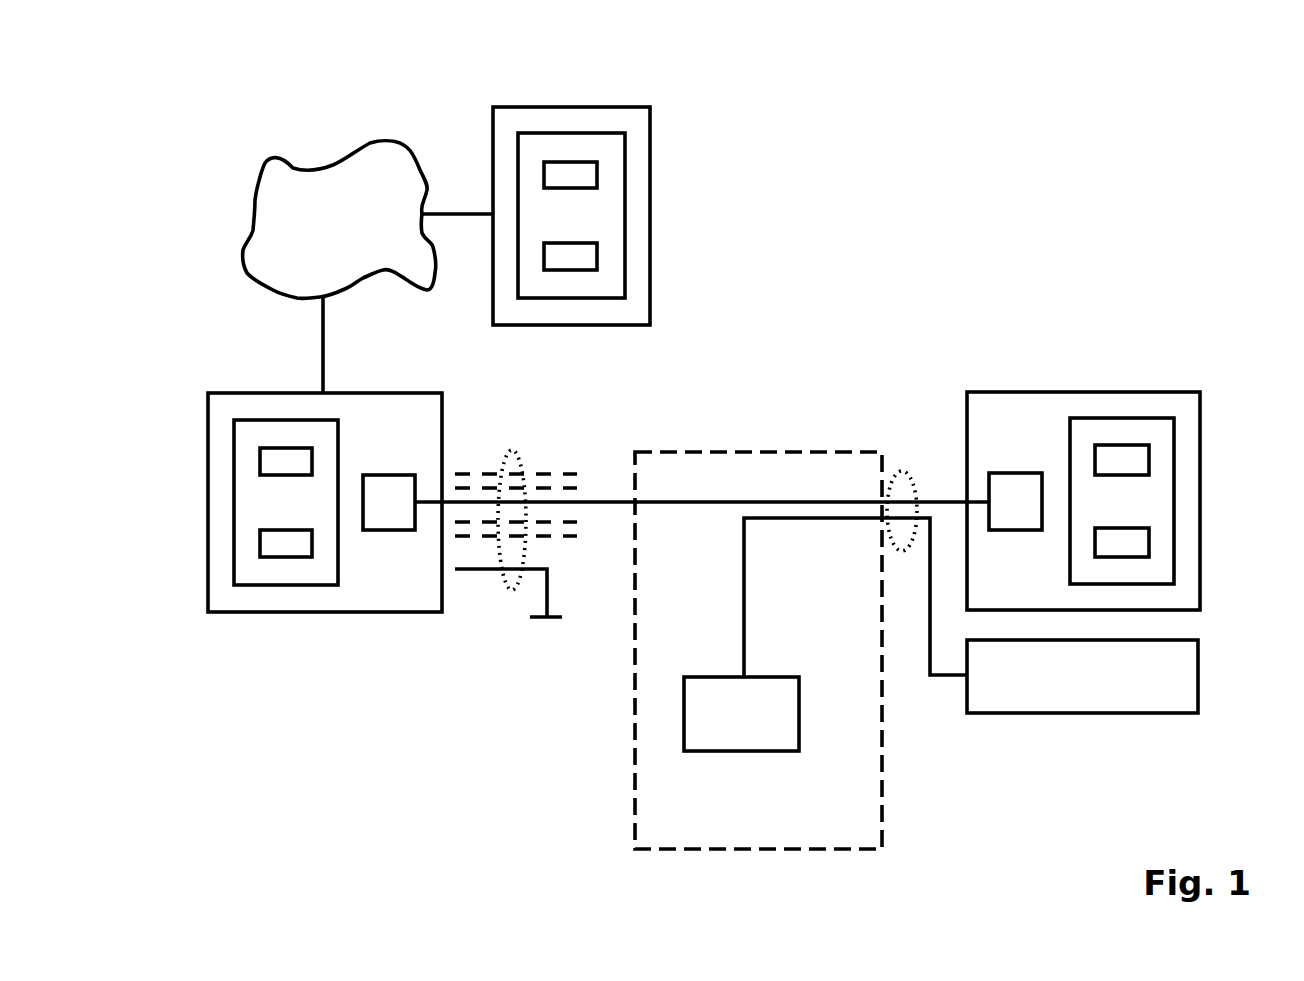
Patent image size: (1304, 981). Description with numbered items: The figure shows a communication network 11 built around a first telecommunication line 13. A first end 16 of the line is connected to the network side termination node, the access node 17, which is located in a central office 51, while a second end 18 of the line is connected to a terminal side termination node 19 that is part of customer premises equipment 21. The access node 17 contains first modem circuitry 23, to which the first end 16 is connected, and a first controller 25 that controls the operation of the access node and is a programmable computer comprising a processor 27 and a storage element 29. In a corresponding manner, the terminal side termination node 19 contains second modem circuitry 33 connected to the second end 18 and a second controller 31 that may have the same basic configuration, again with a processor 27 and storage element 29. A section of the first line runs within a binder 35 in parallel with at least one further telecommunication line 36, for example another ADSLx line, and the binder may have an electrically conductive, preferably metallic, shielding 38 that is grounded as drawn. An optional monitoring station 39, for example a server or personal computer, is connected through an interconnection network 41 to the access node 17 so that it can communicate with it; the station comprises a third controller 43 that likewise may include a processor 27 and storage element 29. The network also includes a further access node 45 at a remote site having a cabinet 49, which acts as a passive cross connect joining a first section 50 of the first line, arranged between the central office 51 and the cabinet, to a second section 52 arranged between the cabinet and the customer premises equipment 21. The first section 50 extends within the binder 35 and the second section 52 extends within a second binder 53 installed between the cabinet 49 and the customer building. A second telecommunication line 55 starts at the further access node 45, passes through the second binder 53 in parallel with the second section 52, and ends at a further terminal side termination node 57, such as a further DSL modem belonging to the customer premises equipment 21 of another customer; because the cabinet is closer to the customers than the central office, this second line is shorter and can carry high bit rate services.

The communication network 11 is at (172, 103).
The first telecommunication line 13 is at (759, 387).
The first end 16 is at (471, 395).
The access node 17 is at (330, 458).
The second end 18 is at (940, 402).
The terminal side termination node 19 is at (1083, 417).
The customer premises equipment 21 is at (1066, 261).
The first modem circuitry 23 is at (405, 530).
The first controller 25 is at (290, 420).
The processor 27 is at (598, 176).
The storage element 29 is at (598, 253).
The second controller 31 is at (1158, 418).
The second modem circuitry 33 is at (1031, 530).
The binder 35 is at (515, 448).
The further telecommunication line 36 is at (545, 473).
The shielding 38 is at (545, 588).
The monitoring station 39 is at (636, 216).
The interconnection network 41 is at (355, 155).
The third controller 43 is at (620, 203).
The further access node 45 is at (799, 715).
The cabinet 49 is at (885, 810).
The first section 50 is at (545, 734).
The central office 51 is at (170, 352).
The second section 52 is at (844, 357).
The second binder 53 is at (915, 487).
The second telecommunication line 55 is at (744, 609).
The further terminal side termination node 57 is at (1198, 682).